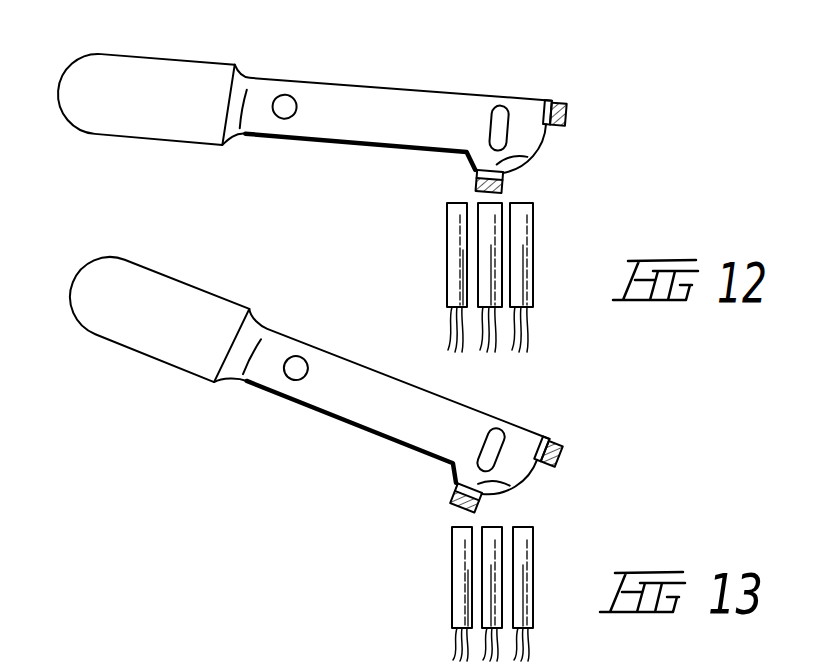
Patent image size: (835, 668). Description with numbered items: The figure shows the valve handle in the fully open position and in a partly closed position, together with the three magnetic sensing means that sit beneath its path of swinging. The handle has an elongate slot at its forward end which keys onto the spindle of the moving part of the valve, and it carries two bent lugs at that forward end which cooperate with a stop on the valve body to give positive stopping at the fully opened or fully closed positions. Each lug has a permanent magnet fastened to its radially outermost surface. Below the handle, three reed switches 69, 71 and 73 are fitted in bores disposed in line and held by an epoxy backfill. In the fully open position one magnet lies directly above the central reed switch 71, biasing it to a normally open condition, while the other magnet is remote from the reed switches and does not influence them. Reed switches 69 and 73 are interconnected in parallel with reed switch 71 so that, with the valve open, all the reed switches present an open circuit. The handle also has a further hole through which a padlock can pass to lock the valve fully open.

In FIG. 12, the reed switch 73 is at (455, 257).
In FIG. 13, the reed switch 73 is at (458, 600).
In FIG. 12, the reed switch 71 is at (485, 236).
In FIG. 13, the reed switch 71 is at (494, 558).
In FIG. 12, the reed switch 69 is at (520, 278).
In FIG. 13, the reed switch 69 is at (522, 573).